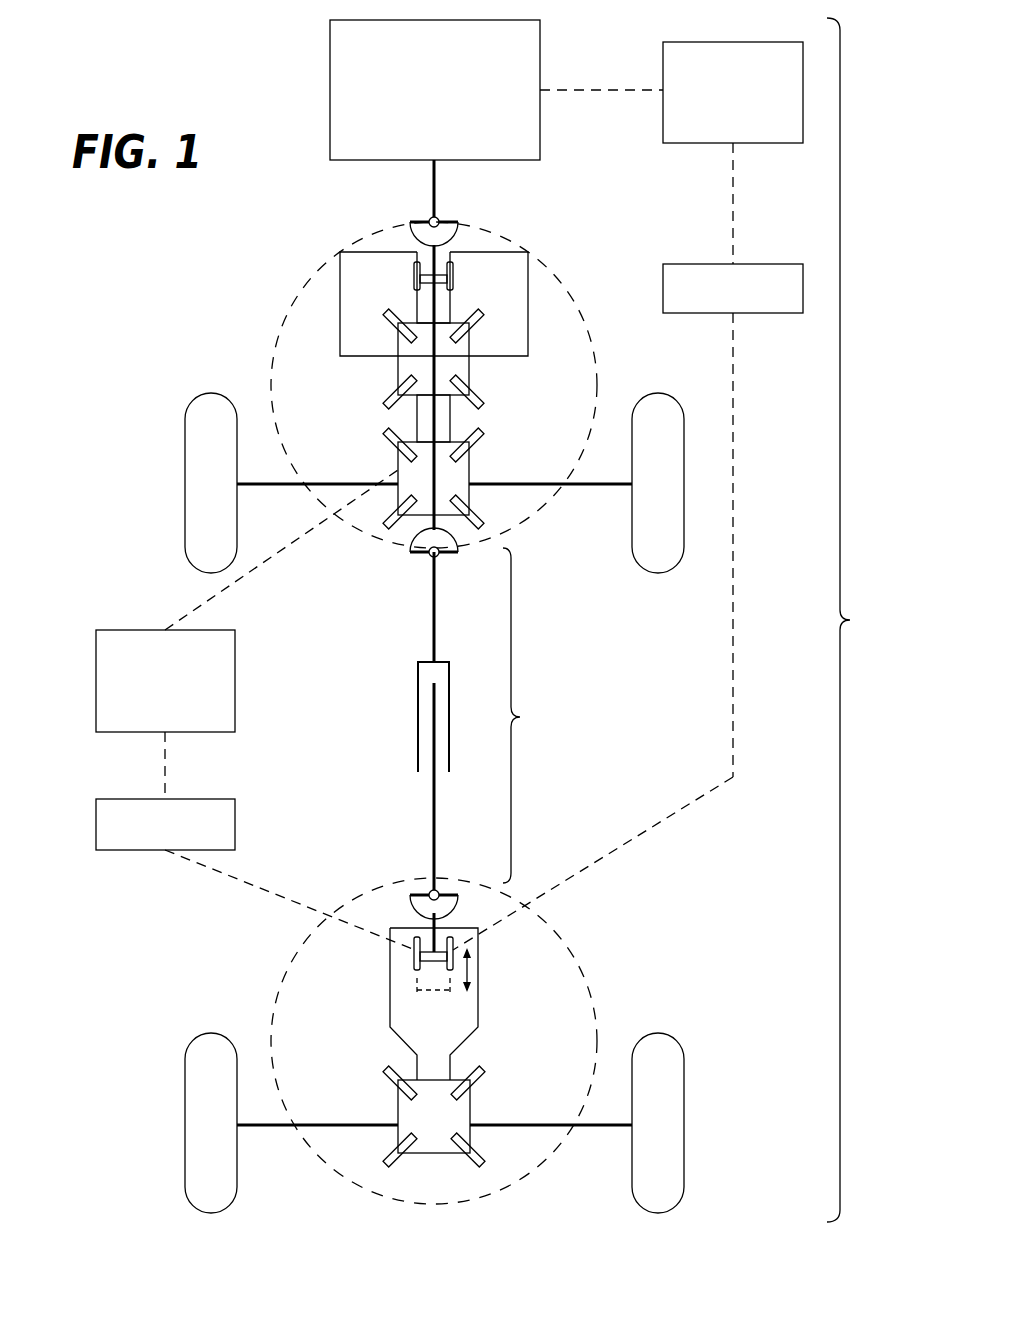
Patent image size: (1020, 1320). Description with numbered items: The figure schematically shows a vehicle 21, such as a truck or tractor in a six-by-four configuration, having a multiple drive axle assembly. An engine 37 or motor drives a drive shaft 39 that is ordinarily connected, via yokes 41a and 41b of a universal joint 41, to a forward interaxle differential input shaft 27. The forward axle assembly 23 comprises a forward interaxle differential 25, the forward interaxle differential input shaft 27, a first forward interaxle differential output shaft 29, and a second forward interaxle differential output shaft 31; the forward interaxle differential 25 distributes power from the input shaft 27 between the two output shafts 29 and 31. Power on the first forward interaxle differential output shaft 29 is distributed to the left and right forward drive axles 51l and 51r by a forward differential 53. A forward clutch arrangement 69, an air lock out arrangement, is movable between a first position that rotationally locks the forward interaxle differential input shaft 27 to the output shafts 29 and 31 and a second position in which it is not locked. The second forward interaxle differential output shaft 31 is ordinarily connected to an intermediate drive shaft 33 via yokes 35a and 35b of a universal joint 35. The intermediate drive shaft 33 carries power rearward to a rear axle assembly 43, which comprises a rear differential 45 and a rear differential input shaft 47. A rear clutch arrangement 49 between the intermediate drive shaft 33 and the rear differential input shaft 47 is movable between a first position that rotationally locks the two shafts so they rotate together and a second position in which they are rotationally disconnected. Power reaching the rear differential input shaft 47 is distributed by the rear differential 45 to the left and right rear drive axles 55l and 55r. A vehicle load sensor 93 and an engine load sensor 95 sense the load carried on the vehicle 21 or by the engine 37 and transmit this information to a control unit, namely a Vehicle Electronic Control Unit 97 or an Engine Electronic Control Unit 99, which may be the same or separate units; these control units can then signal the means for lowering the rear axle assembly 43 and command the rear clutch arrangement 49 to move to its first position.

The vehicle 21 is at (854, 620).
The forward axle assembly 23 is at (556, 250).
The forward interaxle differential 25 is at (530, 330).
The forward interaxle differential input shaft 27 is at (420, 250).
The first forward interaxle differential output shaft 29 is at (417, 412).
The second forward interaxle differential output shaft 31 is at (430, 480).
The intermediate drive shaft 33 is at (484, 721).
The universal joint 35 is at (424, 574).
The yoke 35a is at (414, 545).
The yoke 35b is at (440, 558).
The engine 37 is at (328, 76).
The drive shaft 39 is at (432, 186).
The universal joint 41 is at (452, 206).
The yoke 41a is at (424, 220).
The yoke 41b is at (456, 236).
The rear axle assembly 43 is at (578, 942).
The rear differential 45 is at (422, 1157).
The rear differential input shaft 47 is at (430, 930).
The rear clutch arrangement 49 is at (417, 958).
The left forward drive axle 51l is at (285, 486).
The right forward drive axle 51r is at (582, 486).
The forward differential 53 is at (472, 462).
The left rear drive axle 55l is at (280, 1127).
The right rear drive axle 55r is at (584, 1127).
The forward clutch arrangement 69 is at (413, 280).
The vehicle load sensor 93 is at (120, 629).
The engine load sensor 95 is at (690, 40).
The Vehicle Electronic Control Unit 97 is at (114, 798).
The Engine Electronic Control Unit 99 is at (762, 263).